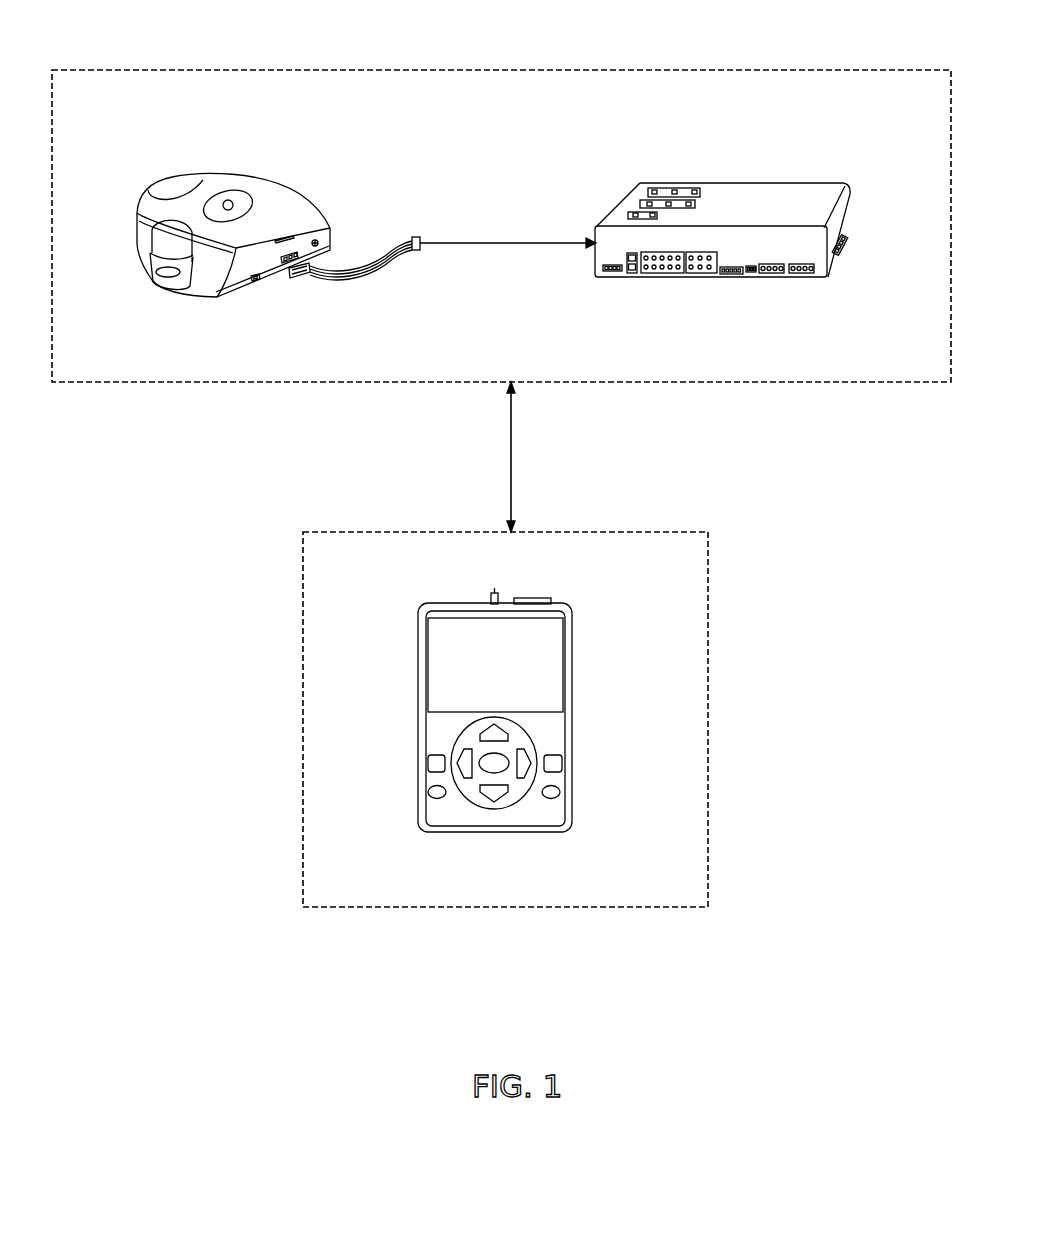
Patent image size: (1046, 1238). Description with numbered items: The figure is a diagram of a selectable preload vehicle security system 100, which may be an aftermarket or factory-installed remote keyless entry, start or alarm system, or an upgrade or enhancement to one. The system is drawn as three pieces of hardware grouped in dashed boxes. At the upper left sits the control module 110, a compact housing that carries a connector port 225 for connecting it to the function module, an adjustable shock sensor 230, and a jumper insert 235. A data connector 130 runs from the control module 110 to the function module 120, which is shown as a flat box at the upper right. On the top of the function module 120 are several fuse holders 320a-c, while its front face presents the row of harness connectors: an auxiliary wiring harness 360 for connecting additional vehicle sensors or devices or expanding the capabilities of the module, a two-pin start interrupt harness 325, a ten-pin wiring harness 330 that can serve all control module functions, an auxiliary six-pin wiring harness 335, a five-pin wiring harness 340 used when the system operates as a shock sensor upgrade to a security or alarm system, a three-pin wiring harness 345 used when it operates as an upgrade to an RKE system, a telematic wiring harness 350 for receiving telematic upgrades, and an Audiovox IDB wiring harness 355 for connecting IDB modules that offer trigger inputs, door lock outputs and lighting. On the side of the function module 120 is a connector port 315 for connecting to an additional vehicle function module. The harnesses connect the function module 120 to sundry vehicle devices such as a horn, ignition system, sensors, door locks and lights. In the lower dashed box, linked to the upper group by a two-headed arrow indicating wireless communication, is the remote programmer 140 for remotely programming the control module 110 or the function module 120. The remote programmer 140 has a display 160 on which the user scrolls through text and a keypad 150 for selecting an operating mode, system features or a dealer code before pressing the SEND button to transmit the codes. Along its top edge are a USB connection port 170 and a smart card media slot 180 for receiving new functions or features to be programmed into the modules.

The vehicle security system 100 is at (653, 48).
The control module 110 is at (288, 196).
The function module 120 is at (740, 190).
The data connector 130 is at (409, 236).
The remote programmer 140 is at (571, 605).
The keypad 150 is at (562, 820).
The display 160 is at (548, 693).
The USB connection port 170 is at (496, 591).
The smart card media slot 180 is at (538, 599).
The connector port 225 is at (285, 266).
The adjustable shock sensor 230 is at (321, 239).
The jumper insert 235 is at (258, 282).
The connector port 315 is at (851, 240).
The fuse holders 320a-c is at (632, 212).
The two-pin start interrupt harness 325 is at (631, 278).
The ten-pin wiring harness 330 is at (665, 278).
The auxiliary six-pin wiring harness 335 is at (698, 278).
The five-pin wiring harness 340 is at (731, 278).
The three-pin wiring harness 345 is at (752, 278).
The telematic wiring harness 350 is at (776, 278).
The IDB wiring harness 355 is at (810, 278).
The auxiliary wiring harness 360 is at (606, 277).